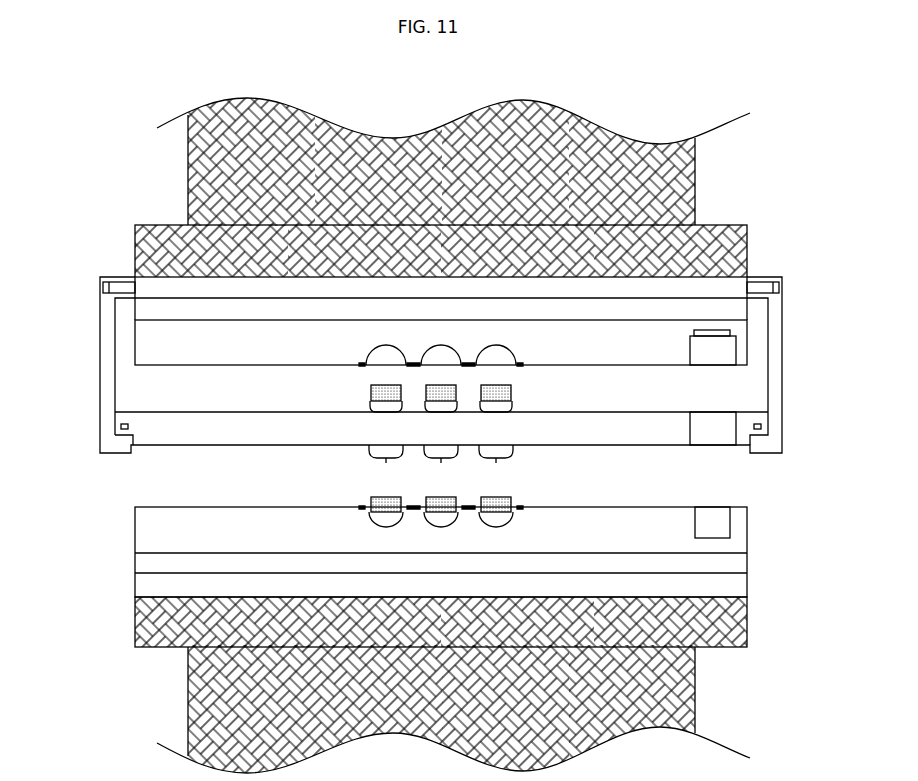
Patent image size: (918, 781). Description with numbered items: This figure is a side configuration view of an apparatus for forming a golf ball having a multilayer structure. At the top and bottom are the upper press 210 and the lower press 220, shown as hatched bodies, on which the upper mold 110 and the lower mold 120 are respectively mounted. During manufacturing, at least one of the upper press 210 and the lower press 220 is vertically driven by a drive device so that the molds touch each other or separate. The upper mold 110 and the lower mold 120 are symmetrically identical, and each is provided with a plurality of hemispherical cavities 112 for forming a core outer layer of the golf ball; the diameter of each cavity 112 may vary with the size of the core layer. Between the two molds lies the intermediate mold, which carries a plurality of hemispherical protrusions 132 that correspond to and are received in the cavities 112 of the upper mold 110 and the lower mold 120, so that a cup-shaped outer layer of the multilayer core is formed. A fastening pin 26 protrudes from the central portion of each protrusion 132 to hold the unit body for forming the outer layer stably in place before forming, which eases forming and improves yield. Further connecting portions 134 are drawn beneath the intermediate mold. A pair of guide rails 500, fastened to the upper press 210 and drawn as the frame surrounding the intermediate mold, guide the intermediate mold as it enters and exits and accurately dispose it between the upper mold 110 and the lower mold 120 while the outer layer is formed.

The fastening pin 26 is at (371, 389).
The upper mold 110 is at (155, 337).
The cavity 112 is at (383, 522).
The lower mold 120 is at (157, 533).
The protrusion 132 is at (507, 407).
The second connection portion 134 is at (499, 456).
The upper press 210 is at (727, 247).
The lower press 220 is at (727, 617).
The guide rail 500 is at (100, 398).